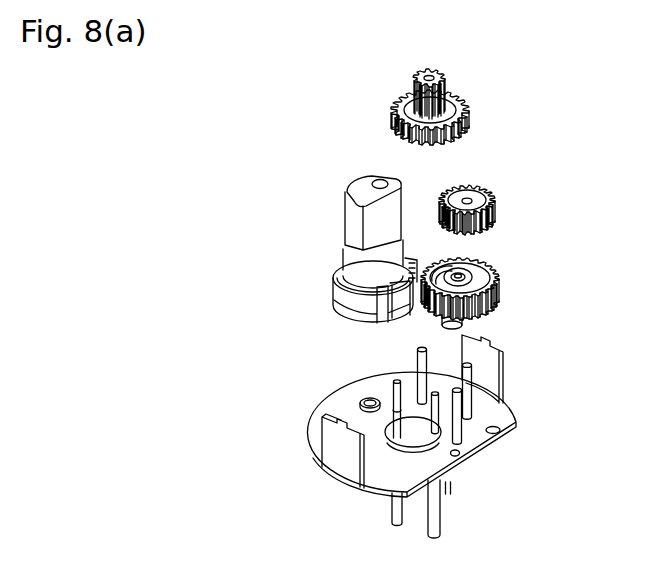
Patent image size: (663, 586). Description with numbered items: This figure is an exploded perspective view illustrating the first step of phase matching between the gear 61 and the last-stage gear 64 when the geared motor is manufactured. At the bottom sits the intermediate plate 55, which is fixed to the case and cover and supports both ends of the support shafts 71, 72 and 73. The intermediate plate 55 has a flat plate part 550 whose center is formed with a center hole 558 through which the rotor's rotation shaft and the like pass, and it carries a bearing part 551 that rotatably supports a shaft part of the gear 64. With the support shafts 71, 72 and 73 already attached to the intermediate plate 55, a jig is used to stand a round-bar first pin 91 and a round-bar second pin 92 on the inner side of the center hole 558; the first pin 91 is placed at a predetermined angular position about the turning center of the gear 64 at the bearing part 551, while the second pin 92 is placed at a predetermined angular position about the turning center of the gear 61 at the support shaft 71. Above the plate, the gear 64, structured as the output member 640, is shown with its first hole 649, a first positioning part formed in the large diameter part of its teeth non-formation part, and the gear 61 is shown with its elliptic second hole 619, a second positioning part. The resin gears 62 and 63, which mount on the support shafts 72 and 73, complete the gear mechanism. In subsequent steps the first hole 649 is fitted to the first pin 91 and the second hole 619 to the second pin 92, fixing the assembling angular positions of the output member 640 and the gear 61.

The gear 63 is at (460, 98).
The gear 62 is at (488, 193).
The gear 61 is at (496, 285).
The second hole 619 is at (485, 263).
The gear of last stage 64 is at (321, 223).
The output member 640 is at (345, 217).
The first hole 649 is at (377, 307).
The intermediate plate 55 is at (477, 448).
The flat plate part 550 is at (383, 450).
The bearing part 551 is at (368, 400).
The center hole 558 is at (383, 438).
The support shaft 73 is at (427, 358).
The support shaft 72 is at (475, 375).
The support shaft 71 is at (455, 423).
The first pin 91 is at (390, 510).
The second pin 92 is at (440, 517).